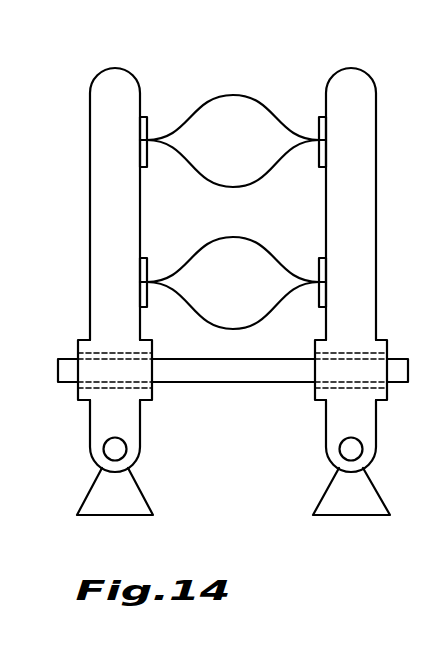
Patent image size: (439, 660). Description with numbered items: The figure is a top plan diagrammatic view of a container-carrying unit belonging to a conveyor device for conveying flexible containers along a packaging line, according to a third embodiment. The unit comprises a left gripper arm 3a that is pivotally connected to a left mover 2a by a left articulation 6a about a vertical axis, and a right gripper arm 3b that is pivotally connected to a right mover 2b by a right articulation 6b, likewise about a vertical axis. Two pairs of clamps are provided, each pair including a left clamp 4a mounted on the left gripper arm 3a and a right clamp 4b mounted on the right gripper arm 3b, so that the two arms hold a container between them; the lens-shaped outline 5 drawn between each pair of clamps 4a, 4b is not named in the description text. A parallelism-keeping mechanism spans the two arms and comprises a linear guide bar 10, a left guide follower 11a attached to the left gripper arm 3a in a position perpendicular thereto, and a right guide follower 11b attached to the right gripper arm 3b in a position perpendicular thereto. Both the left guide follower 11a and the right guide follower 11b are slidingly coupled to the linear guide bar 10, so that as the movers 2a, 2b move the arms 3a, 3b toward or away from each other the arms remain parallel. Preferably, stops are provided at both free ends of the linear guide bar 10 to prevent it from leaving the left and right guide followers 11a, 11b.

The left mover 2a is at (115, 507).
The right mover 2b is at (351, 507).
The left gripper arm 3a is at (100, 217).
The right gripper arm 3b is at (366, 217).
The left clamp 4a is at (145, 114).
The right clamp 4b is at (320, 114).
The lens-shaped member 5 is at (232, 94).
The left articulation 6a is at (110, 451).
The right articulation 6b is at (356, 451).
The linear guide bar 10 is at (216, 376).
The left guide follower 11a is at (107, 352).
The right guide follower 11b is at (359, 352).